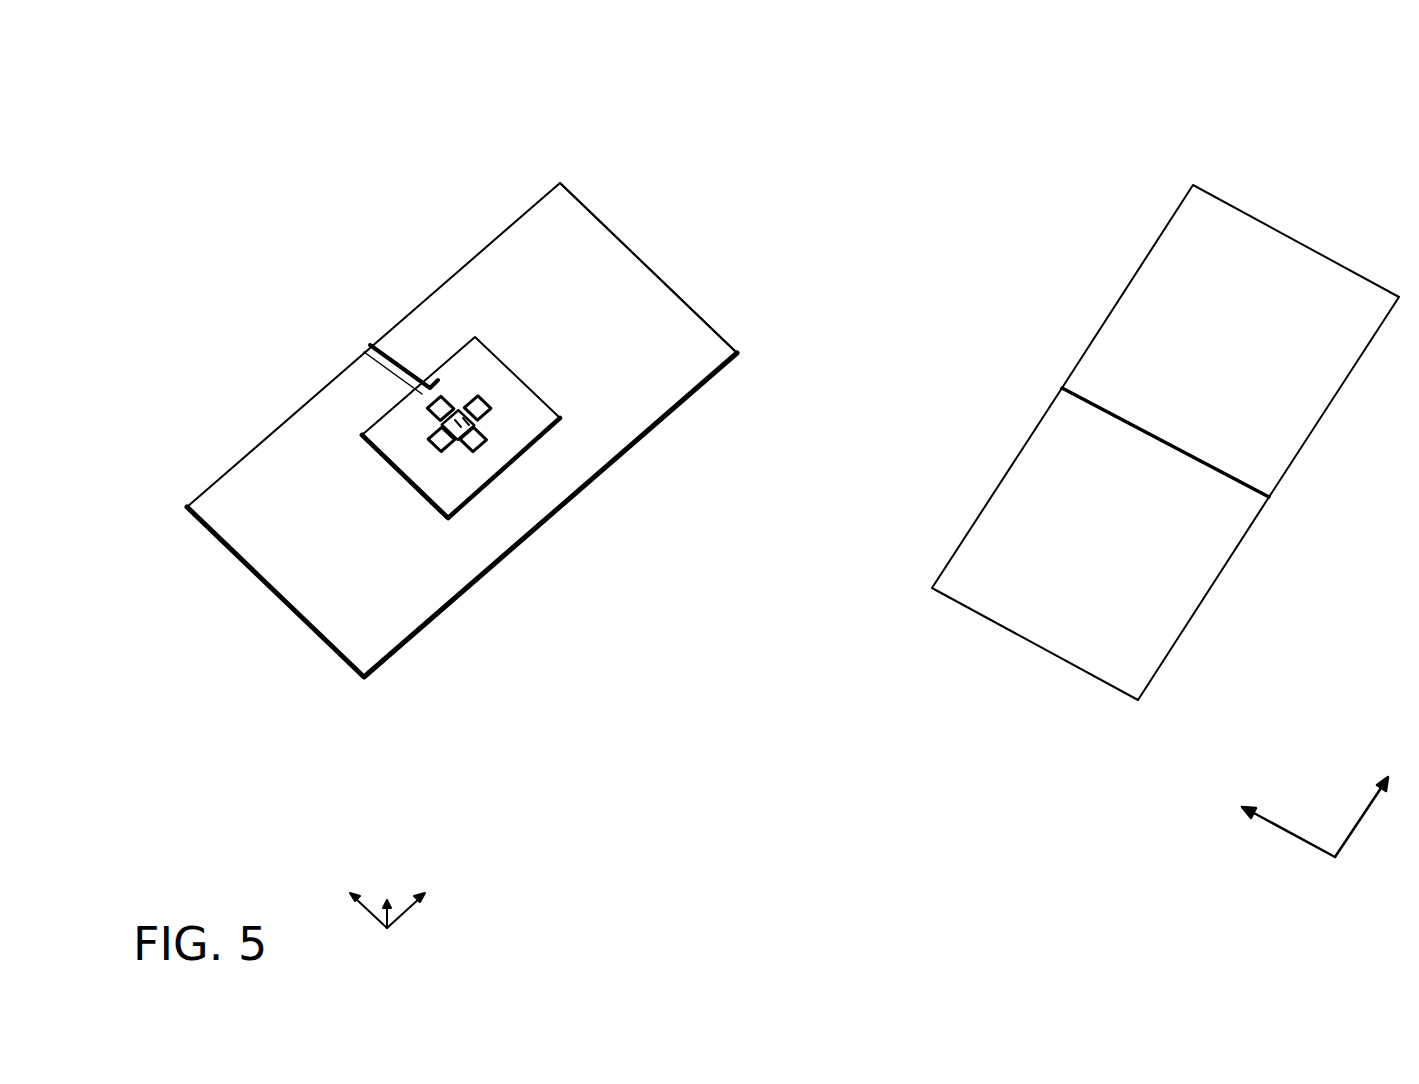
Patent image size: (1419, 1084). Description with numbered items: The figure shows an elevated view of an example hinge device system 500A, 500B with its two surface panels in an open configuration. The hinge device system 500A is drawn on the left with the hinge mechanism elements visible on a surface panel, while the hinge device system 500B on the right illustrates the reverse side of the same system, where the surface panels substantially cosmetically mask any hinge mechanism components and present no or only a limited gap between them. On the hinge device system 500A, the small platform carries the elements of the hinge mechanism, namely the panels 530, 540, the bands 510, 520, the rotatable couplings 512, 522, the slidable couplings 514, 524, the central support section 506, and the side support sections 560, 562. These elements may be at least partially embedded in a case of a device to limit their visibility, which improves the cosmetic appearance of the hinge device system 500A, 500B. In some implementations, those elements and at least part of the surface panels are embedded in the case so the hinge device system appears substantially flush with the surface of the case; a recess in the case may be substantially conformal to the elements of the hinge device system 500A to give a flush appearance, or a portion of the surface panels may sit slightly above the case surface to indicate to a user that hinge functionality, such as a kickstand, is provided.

The hinge device system 500A is at (545, 116).
The hinge device system 500B is at (1134, 143).
The band 520 is at (487, 420).
The panel 530 is at (403, 443).
The panel 540 is at (455, 385).
The rotatable coupling 522 is at (465, 418).
The slidable coupling 524 is at (487, 410).
The side support section 560 is at (437, 408).
The slidable coupling 514 is at (437, 450).
The side support section 562 is at (485, 440).
The band 510 is at (447, 457).
The rotatable coupling 512 is at (455, 445).
The central support section 506 is at (466, 440).